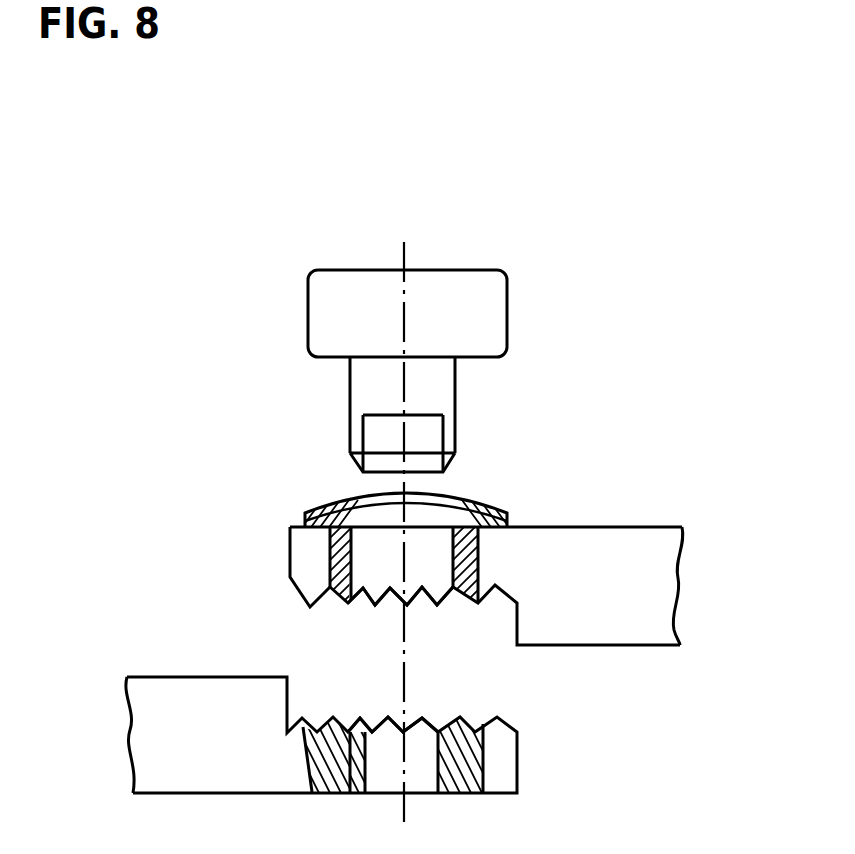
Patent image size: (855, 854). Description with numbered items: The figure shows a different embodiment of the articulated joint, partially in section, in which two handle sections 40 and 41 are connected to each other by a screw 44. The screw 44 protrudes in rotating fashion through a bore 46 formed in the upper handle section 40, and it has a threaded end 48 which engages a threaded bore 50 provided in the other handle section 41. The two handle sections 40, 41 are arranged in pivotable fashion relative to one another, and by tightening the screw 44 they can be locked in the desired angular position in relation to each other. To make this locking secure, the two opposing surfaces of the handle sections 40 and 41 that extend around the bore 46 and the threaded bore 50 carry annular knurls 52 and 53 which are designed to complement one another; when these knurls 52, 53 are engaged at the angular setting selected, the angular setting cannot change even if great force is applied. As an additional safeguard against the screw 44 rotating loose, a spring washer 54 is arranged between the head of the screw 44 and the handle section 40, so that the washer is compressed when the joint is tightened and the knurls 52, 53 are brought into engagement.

The handle section 40 is at (603, 527).
The handle section 41 is at (162, 675).
The screw 44 is at (507, 310).
The bore 46 is at (356, 558).
The threaded end 48 is at (455, 430).
The threaded bore 50 is at (405, 762).
The annular knurls 52 is at (355, 614).
The annular knurls 53 is at (438, 703).
The spring washer 54 is at (333, 503).